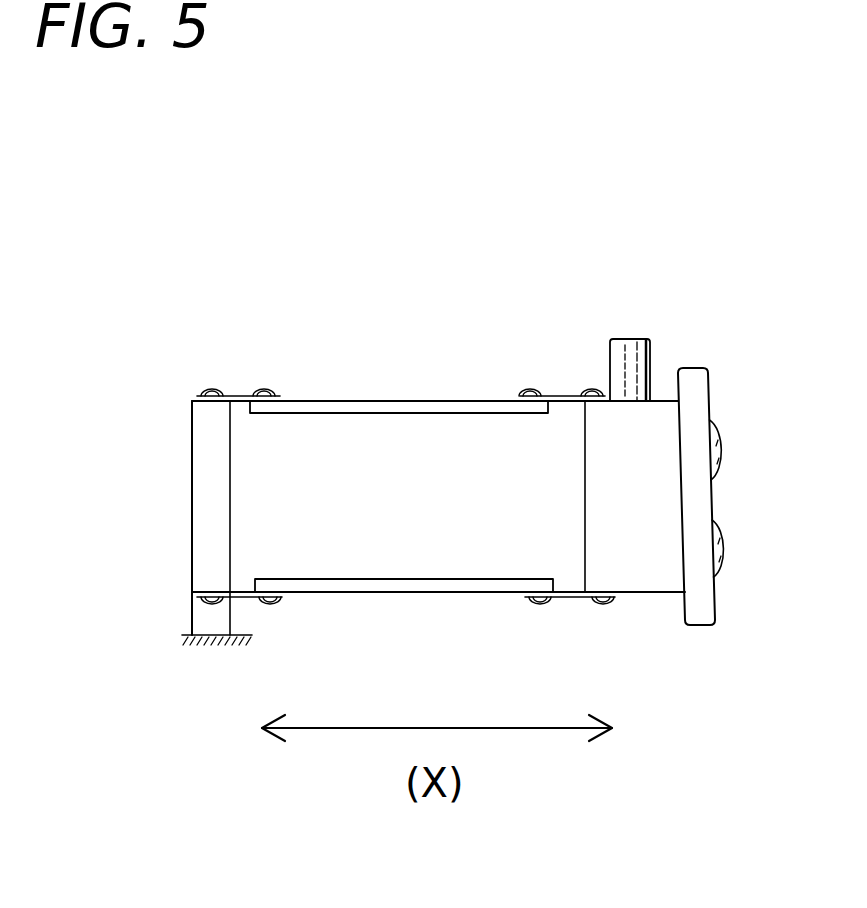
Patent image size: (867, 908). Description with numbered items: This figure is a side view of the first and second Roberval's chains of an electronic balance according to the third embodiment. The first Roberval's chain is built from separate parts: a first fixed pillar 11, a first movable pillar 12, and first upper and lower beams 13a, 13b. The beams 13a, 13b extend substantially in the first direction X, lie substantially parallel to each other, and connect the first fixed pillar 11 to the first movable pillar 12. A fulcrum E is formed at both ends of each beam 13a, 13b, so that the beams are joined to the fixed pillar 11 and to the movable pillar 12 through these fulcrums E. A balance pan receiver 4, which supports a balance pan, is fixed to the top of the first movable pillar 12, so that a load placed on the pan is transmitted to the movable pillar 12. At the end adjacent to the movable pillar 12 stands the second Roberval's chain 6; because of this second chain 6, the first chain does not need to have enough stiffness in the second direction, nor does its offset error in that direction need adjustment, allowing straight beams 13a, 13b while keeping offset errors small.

The first fixed pillar 11 is at (197, 503).
The first movable pillar 12 is at (648, 578).
The first upper beam 13a is at (410, 398).
The first lower beam 13b is at (417, 595).
The fulcrum E is at (238, 393).
The balance pan receiver 4 is at (637, 357).
The second Roberval's chain 6 is at (722, 375).